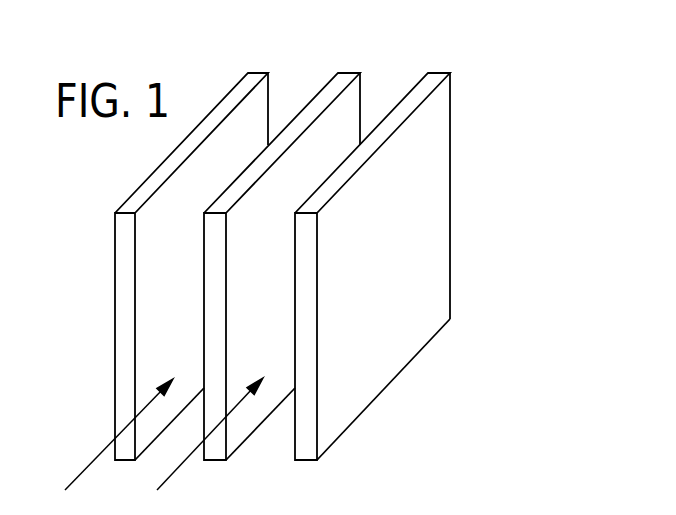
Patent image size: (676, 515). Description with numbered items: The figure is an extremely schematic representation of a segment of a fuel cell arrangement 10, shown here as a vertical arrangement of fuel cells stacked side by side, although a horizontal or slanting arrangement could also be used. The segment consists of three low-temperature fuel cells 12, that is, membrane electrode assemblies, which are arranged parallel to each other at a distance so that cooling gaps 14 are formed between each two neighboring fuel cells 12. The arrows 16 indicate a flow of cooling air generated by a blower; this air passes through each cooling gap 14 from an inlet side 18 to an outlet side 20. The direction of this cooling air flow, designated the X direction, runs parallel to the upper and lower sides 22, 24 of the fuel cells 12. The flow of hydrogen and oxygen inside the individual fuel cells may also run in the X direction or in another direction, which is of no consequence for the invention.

The fuel cell arrangement 10 is at (270, 261).
The low-temperature fuel cell 12 is at (250, 76).
The cooling gap 14 is at (298, 97).
The arrows 16 is at (76, 480).
The inlet side 18 is at (125, 310).
The outlet side 20 is at (453, 165).
The upper side 22 is at (366, 410).
The lower side 24 is at (355, 165).